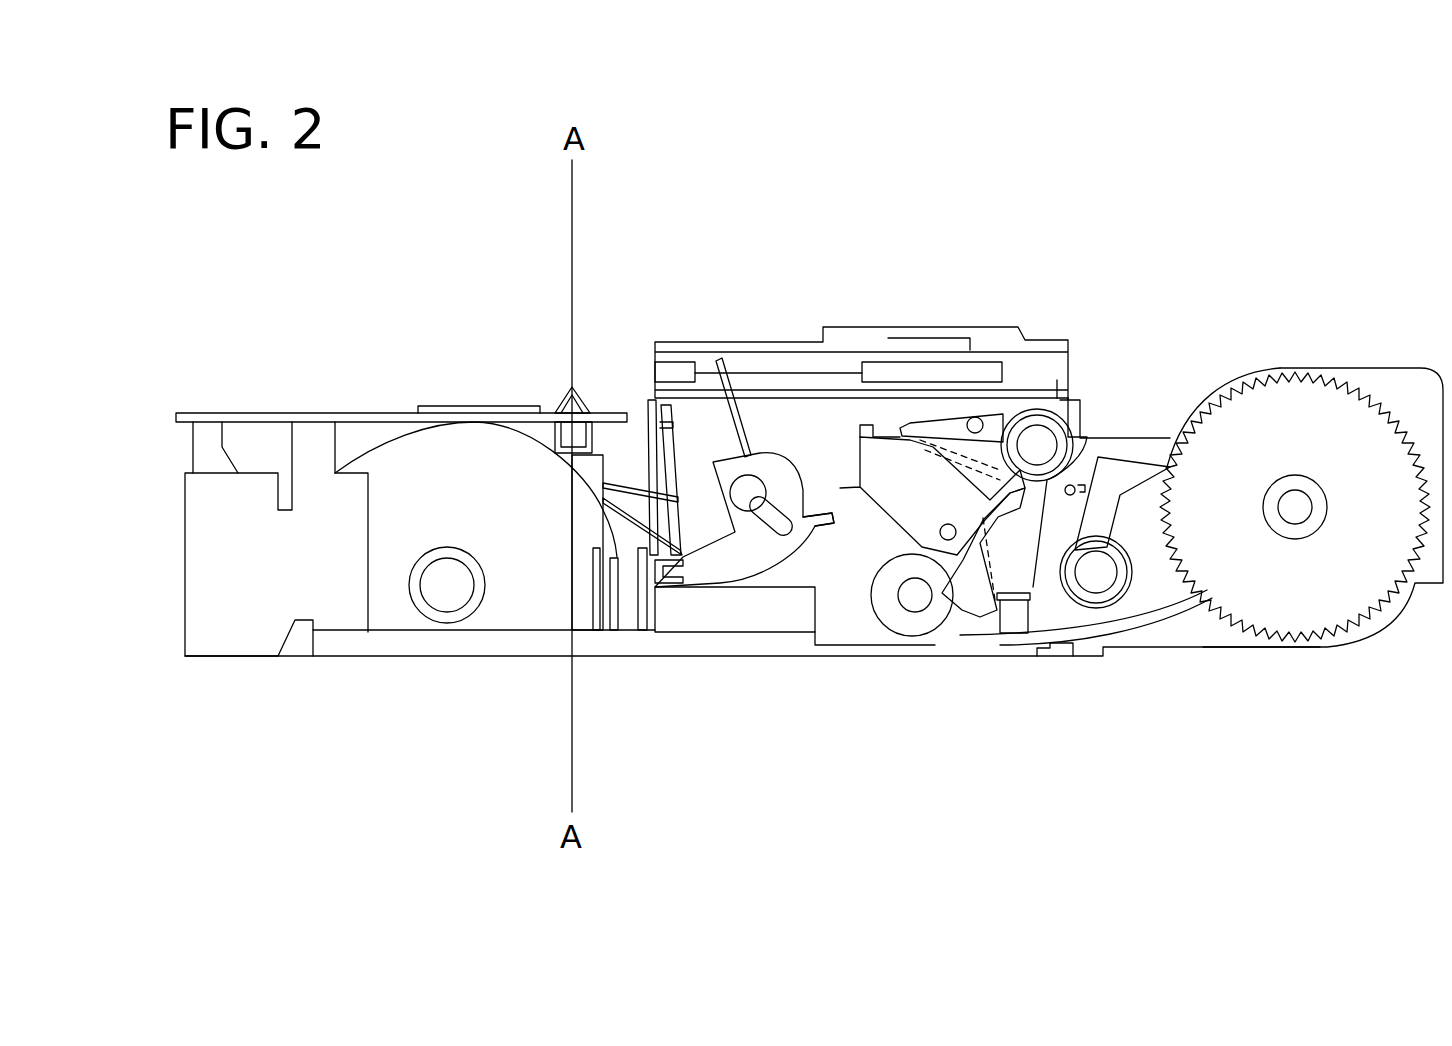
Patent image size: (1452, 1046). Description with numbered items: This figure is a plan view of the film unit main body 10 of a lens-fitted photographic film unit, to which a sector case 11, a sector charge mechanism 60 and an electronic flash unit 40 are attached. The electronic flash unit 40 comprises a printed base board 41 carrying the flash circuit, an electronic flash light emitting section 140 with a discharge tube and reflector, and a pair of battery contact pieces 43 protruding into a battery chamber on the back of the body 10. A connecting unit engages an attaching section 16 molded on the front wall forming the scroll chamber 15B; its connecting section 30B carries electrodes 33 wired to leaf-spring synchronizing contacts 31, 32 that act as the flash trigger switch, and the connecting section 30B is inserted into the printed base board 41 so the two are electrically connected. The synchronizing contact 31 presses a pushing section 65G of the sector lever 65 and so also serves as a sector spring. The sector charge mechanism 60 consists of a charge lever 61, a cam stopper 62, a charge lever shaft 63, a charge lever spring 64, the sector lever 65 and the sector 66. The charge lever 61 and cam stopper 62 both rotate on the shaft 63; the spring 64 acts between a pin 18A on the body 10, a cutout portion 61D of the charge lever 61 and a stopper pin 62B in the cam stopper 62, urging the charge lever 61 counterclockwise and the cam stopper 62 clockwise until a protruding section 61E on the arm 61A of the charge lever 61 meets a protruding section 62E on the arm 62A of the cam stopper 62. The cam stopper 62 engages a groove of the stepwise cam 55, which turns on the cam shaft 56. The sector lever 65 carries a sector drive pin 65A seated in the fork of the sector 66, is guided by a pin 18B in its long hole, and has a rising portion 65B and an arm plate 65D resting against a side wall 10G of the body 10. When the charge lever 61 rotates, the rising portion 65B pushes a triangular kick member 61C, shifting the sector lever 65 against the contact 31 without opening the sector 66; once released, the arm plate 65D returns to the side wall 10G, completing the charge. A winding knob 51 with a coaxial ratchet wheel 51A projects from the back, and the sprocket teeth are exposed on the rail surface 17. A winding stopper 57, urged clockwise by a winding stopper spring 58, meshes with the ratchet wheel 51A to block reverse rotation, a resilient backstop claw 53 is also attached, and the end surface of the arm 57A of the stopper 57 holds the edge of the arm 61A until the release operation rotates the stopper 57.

The film unit body 10 is at (1300, 350).
The side wall 10G is at (690, 625).
The sector case 11 is at (660, 342).
The electronic flash light emitting section 140 is at (395, 405).
The scroll chamber 15B is at (410, 645).
The attaching section 16 is at (590, 482).
The rail surface 17 is at (226, 645).
The pin 18A is at (1095, 535).
The pin 18B is at (720, 378).
The connecting section 30B is at (562, 383).
The synchronizing contact 31 is at (620, 515).
The synchronizing contact 32 is at (648, 480).
The electrodes 33 is at (553, 425).
The electronic flash unit 40 is at (297, 372).
The printed base board 41 is at (212, 412).
The battery contact pieces 43 is at (197, 450).
The winding knob 51 is at (1290, 632).
The ratchet wheel 51A is at (1395, 383).
The backstop claw 53 is at (1185, 632).
The cam 55 is at (930, 635).
The cam shaft 56 is at (900, 603).
The winding stopper 57 is at (1160, 462).
The arm 57A is at (1080, 652).
The winding stopper spring 58 is at (1050, 635).
The sector charge mechanism 60 is at (840, 410).
The charge lever 61 is at (960, 418).
The arm 61A is at (1035, 607).
The kick member 61C is at (838, 470).
The cutout portion 61D is at (905, 428).
The protruding section 61E is at (997, 607).
The cam stopper 62 is at (1075, 488).
The arm 62A is at (1133, 578).
The stopper pin 62B is at (1047, 412).
The protruding section 62E is at (1128, 548).
The charge lever shaft 63 is at (1068, 352).
The charge lever spring 64 is at (1037, 408).
The sector lever 65 is at (781, 348).
The sector drive pin 65A is at (745, 472).
The rising portion 65B is at (828, 526).
The arm plate 65D is at (748, 568).
The pushing section 65G is at (662, 565).
The sector 66 is at (812, 342).